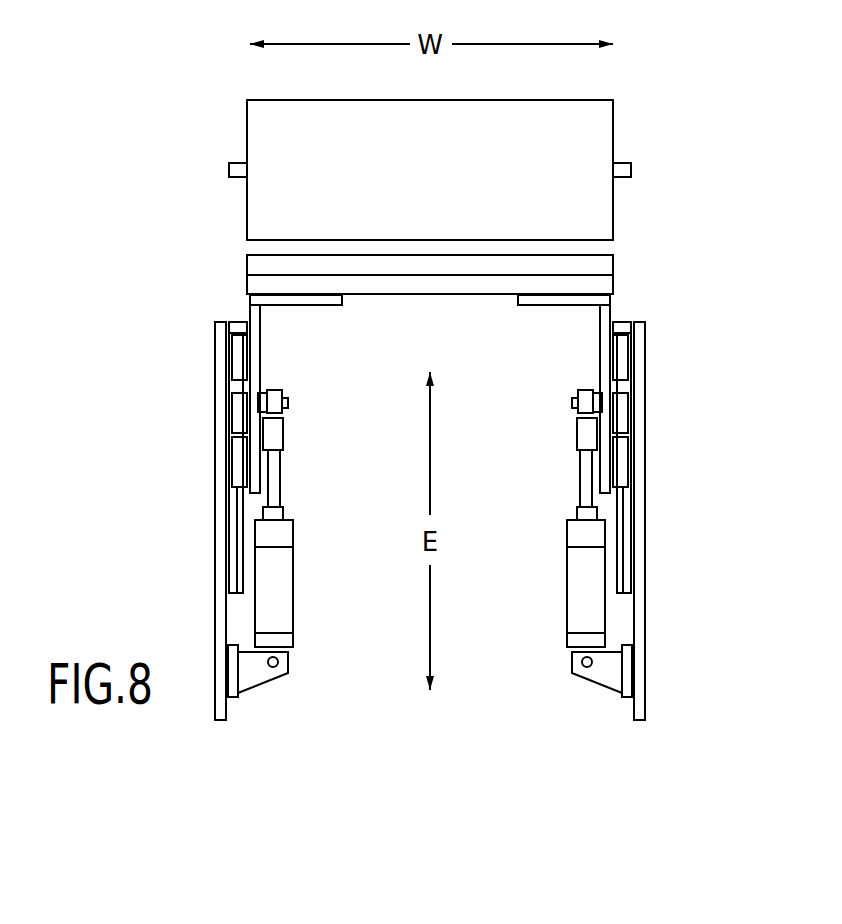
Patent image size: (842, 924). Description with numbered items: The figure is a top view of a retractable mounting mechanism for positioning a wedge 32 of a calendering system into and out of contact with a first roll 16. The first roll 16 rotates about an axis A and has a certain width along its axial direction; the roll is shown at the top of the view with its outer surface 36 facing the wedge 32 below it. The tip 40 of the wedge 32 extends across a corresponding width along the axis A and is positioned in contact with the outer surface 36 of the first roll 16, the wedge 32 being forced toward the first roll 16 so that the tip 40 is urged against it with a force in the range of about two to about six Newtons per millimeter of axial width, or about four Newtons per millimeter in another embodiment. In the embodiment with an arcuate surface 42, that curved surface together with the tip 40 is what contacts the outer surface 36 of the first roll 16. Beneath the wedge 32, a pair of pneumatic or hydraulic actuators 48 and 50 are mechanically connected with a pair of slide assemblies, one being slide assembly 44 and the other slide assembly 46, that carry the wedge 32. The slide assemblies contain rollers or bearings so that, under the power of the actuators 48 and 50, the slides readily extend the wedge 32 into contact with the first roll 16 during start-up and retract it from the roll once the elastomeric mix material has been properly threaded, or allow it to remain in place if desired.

The first roll 16 is at (455, 191).
The outer surface 36 is at (580, 100).
The axis A is at (631, 170).
The tip 40 is at (613, 255).
The wedge 32 is at (613, 287).
The arcuate surface 42 is at (258, 263).
The slide assembly 44 is at (623, 543).
The left guide rail 46 is at (233, 537).
The actuator 48 is at (580, 608).
The actuator 50 is at (277, 599).